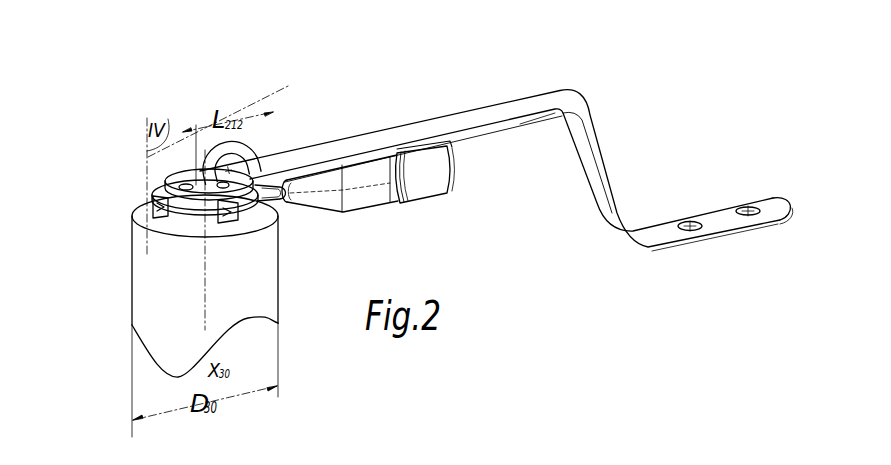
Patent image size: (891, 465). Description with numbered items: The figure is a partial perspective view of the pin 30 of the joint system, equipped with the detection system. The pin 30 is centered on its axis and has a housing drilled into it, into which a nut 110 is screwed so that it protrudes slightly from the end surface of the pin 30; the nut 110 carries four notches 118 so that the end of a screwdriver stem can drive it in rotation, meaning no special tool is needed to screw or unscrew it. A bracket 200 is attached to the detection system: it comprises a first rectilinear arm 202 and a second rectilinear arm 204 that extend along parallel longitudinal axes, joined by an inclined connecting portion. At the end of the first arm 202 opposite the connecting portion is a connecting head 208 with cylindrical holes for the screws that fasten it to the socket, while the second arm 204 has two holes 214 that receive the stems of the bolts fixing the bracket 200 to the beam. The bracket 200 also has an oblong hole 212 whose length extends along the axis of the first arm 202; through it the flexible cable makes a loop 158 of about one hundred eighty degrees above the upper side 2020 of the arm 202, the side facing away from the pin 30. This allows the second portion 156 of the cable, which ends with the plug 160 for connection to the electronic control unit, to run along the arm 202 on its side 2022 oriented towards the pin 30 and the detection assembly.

The pin 30 is at (145, 287).
The nut 110 is at (190, 218).
The connecting head 208 is at (178, 172).
The notches 118 is at (247, 222).
The oblong hole 212 is at (245, 220).
The loop 158 is at (250, 142).
The bracket 200 is at (521, 153).
The upper side of arm 202 2020 is at (467, 117).
The side of arm 202 oriented towards the pin 2022 is at (500, 134).
The second rectilinear arm 204 is at (718, 217).
The holes 214 is at (690, 224).
The second portion of cable 156 is at (268, 205).
The plug 160 is at (368, 192).
The first rectilinear arm 202 is at (452, 190).